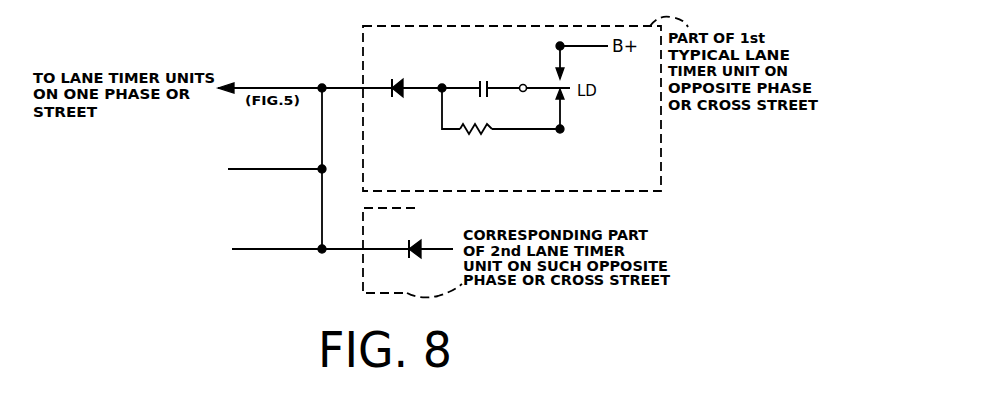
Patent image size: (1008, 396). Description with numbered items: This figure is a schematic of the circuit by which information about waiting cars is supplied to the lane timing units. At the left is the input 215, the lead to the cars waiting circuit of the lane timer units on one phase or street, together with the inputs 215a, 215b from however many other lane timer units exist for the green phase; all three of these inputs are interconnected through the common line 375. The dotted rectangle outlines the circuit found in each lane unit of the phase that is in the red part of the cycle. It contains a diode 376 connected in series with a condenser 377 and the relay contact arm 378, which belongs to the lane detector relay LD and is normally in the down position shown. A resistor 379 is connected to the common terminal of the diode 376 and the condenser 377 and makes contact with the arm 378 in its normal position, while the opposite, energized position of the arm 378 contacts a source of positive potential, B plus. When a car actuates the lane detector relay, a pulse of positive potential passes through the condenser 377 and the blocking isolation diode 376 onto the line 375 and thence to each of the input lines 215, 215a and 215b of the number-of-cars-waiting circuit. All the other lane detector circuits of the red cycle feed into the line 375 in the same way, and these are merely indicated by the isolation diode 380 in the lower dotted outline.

The input lead 215 is at (265, 85).
The line 375 is at (322, 131).
The input 215a is at (249, 170).
The input 215b is at (249, 250).
The diode 376 is at (398, 79).
The condenser 377 is at (484, 81).
The relay contact arm 378 is at (540, 86).
The resistor 379 is at (477, 133).
The isolation diode 380 is at (415, 259).